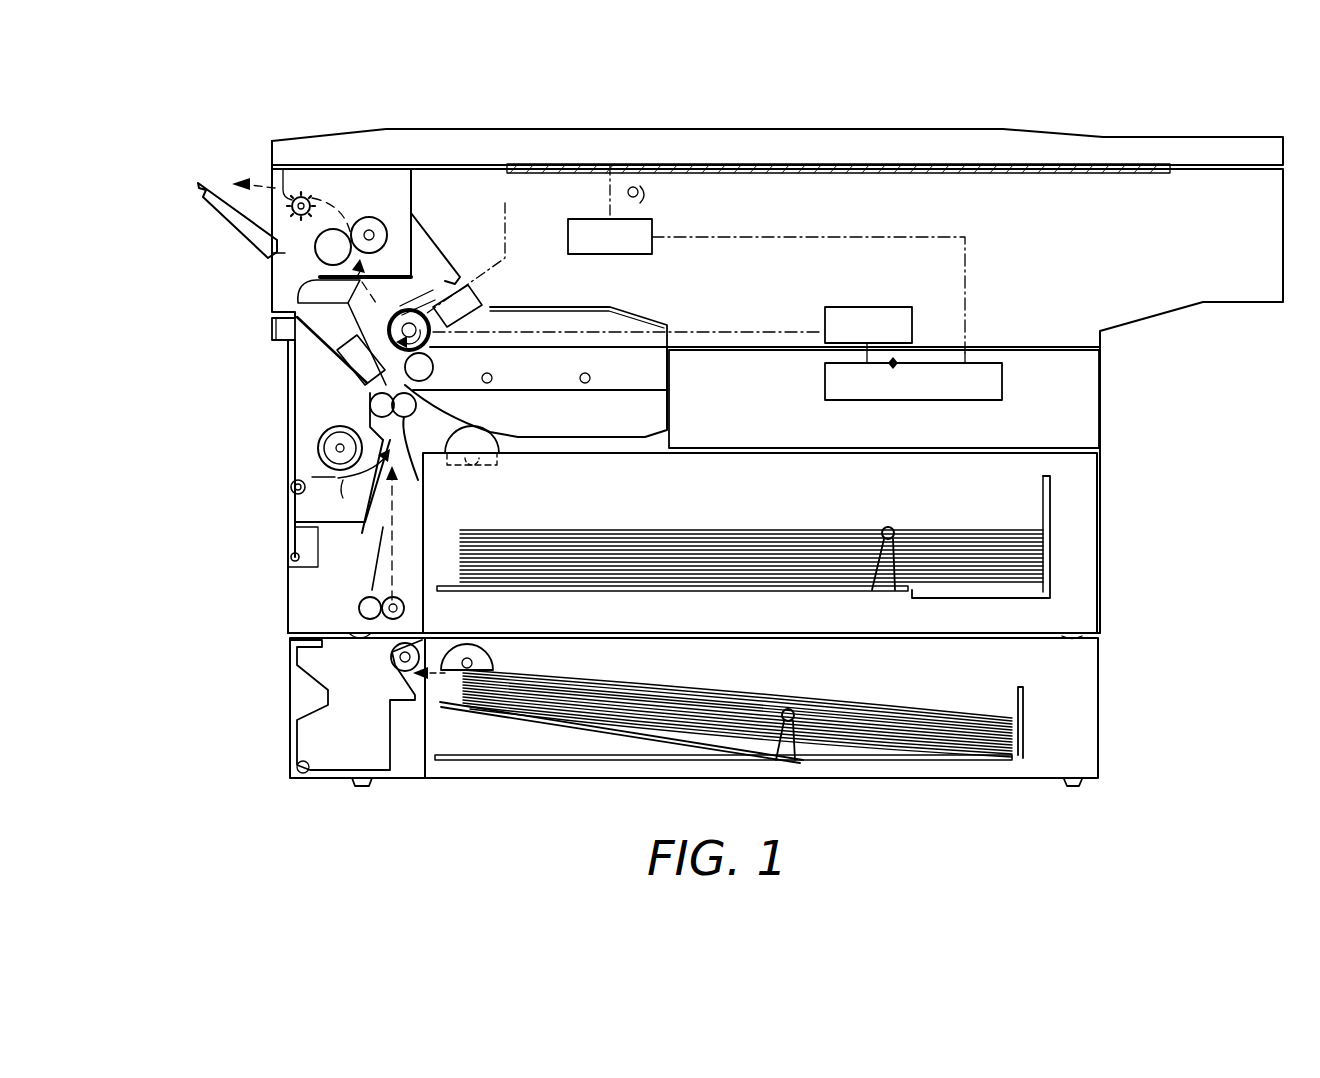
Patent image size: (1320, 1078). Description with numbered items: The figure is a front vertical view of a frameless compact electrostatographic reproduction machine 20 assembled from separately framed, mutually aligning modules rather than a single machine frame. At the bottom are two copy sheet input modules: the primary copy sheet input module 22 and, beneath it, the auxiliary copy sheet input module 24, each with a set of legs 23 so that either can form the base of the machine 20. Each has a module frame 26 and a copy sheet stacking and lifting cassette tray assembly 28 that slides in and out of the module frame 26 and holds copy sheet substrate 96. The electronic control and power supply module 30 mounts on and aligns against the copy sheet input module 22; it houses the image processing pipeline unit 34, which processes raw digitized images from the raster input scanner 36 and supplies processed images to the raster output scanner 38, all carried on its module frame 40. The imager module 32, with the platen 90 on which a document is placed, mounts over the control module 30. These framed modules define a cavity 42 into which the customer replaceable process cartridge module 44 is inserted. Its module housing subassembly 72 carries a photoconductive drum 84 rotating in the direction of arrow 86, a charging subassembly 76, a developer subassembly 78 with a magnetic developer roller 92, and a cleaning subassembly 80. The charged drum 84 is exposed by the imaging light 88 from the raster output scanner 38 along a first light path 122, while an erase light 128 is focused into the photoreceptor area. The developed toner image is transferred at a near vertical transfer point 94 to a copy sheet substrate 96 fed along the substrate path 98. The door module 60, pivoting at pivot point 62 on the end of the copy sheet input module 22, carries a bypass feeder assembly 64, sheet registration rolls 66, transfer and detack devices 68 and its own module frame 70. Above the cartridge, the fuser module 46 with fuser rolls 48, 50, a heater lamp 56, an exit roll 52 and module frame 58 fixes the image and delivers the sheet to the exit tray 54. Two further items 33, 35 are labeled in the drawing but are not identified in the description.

The compact electrostatographic reproduction machine 20 is at (724, 74).
The copy sheet input module 22 is at (924, 490).
The legs 23 is at (354, 634).
The auxiliary copy sheet input module 24 is at (924, 684).
The module frame 26 is at (288, 596).
The copy sheet stacking and lifting cassette tray assembly 28 is at (585, 591).
The electronic control and power supply module 30 is at (926, 436).
The imager module 32 is at (1144, 255).
The sensor 33 is at (645, 192).
The image processing pipeline unit 34 is at (926, 396).
The housing step 35 is at (1130, 325).
The Raster Input Scanner 36 is at (621, 249).
The Raster Output Scanner 38 is at (877, 337).
The module frame 40 is at (1103, 432).
The cavity 42 is at (626, 436).
The process cartridge module 44 is at (568, 303).
The fuser module 46 is at (263, 176).
The fuser roll 48 is at (366, 216).
The fuser roll 50 is at (320, 262).
The exit roll 52 is at (303, 196).
The exit tray 54 is at (223, 226).
The heater lamp 56 is at (380, 233).
The module frame 58 is at (411, 253).
The door module 60 is at (276, 437).
The pivot point 62 is at (291, 560).
The bypass feeder assembly 64 is at (316, 452).
The sheet registration rolls 66 is at (370, 405).
The toner image transfer and detack devices 68 is at (348, 365).
The module frame 70 is at (288, 500).
The module housing subassembly 72 is at (690, 308).
The charging subassembly 76 is at (470, 300).
The developer subassembly 78 is at (652, 408).
The cleaning subassembly 80 is at (300, 318).
The photoconductive drum 84 is at (397, 320).
The arrow 86 is at (432, 338).
The imaging/exposing light 88 is at (777, 332).
The platen 90 is at (920, 172).
The magnetic developer roller 92 is at (434, 372).
The transfer point 94 is at (395, 338).
The copy sheet substrate 96 is at (675, 530).
The copy sheet path 98 is at (395, 500).
The first light path 122 is at (648, 341).
The erase light 128 is at (470, 252).